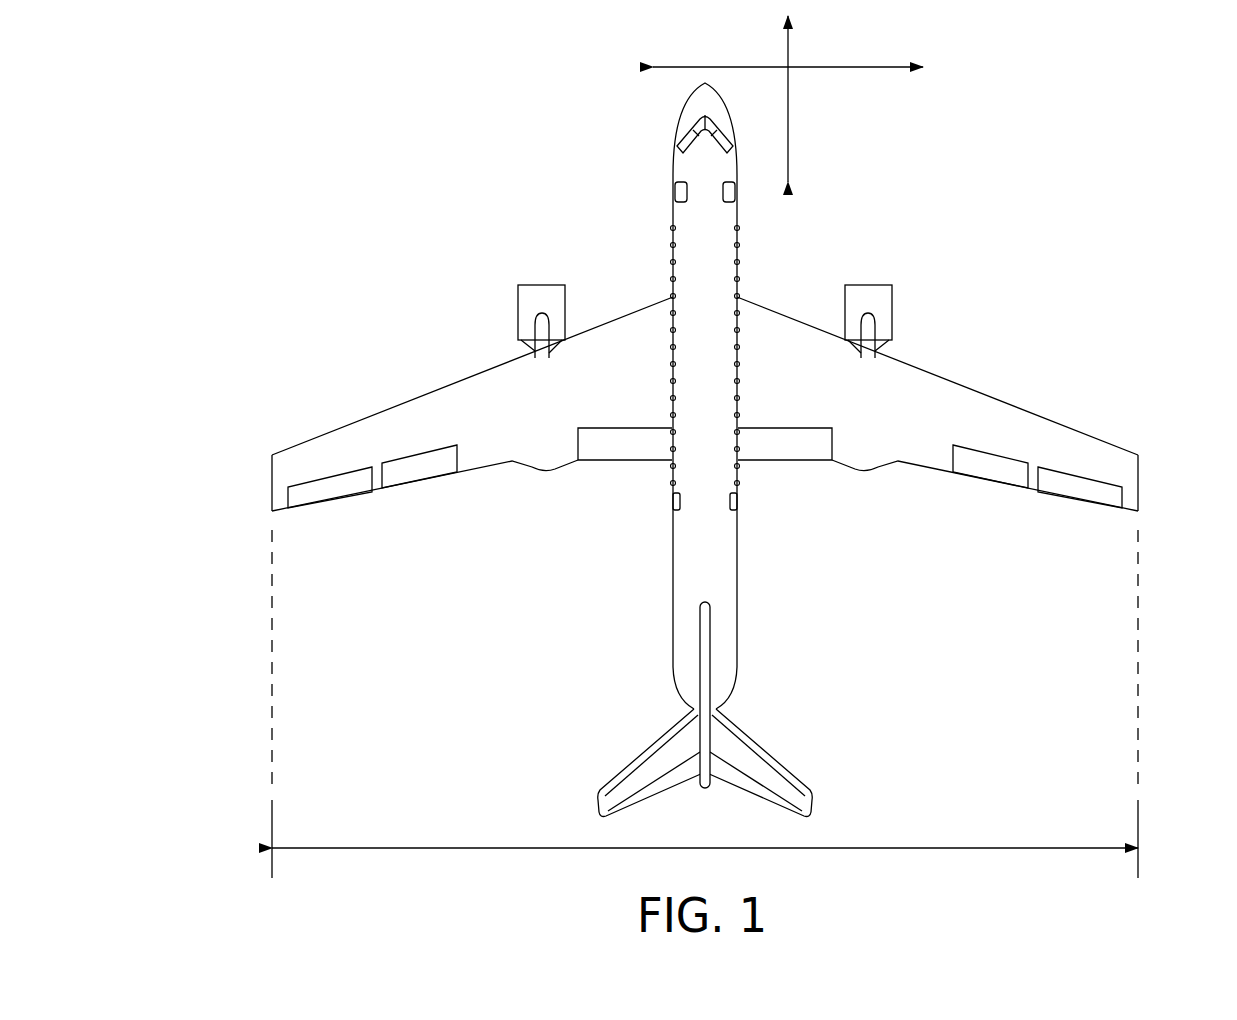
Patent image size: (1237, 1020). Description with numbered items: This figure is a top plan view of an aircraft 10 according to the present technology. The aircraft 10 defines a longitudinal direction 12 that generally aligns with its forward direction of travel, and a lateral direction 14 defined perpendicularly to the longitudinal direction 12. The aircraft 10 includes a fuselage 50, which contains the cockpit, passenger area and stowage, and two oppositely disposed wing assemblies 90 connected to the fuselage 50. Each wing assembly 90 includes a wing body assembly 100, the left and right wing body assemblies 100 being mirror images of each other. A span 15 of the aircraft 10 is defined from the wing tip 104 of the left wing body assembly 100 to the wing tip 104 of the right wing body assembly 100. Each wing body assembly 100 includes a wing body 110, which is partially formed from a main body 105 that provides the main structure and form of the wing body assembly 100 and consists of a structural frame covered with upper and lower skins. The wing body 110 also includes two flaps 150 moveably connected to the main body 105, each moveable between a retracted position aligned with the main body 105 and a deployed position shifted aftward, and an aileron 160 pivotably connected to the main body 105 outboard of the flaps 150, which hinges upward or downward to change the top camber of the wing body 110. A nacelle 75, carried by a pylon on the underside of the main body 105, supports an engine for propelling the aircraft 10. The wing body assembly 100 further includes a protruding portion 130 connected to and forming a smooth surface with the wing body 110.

The aircraft 10 is at (242, 112).
The longitudinal direction 12 is at (788, 100).
The lateral direction 14 is at (888, 69).
The span 15 is at (1000, 848).
The fuselage 50 is at (720, 237).
The nacelle 75 is at (514, 300).
The wing assembly 90 is at (342, 270).
The wing body assembly 100 is at (1118, 272).
The wing tip 104 is at (234, 462).
The main body 105 is at (703, 443).
The wing body 110 is at (420, 412).
The protruding portion 130 is at (542, 475).
The flap 150 is at (622, 450).
The aileron 160 is at (338, 488).